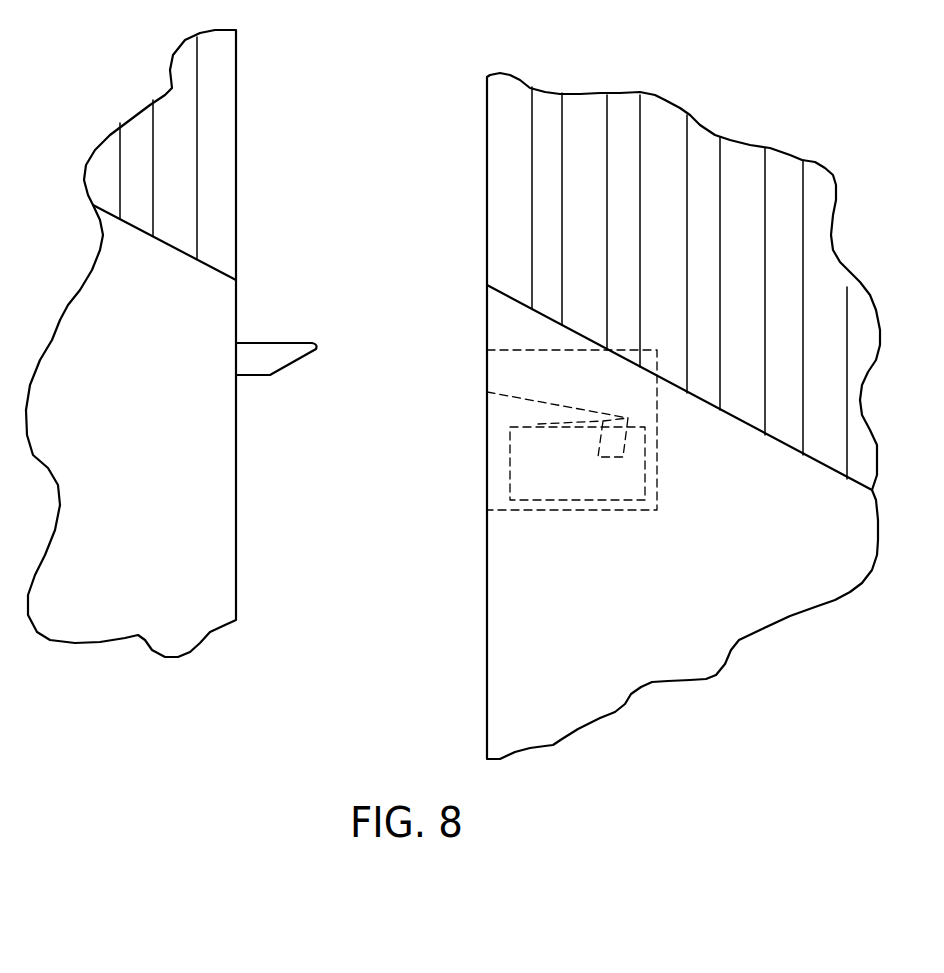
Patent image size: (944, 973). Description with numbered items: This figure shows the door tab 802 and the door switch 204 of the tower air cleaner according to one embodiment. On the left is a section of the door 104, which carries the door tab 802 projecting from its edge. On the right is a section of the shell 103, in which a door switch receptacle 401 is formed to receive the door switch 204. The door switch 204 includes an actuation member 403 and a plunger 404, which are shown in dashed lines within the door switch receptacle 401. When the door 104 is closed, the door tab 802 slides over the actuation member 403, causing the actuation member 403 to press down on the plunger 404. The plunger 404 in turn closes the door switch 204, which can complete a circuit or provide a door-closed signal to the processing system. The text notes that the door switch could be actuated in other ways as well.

The shell 103 is at (487, 674).
The door 104 is at (236, 553).
The door tab 802 is at (253, 380).
The door switch receptacle 401 is at (487, 452).
The actuation member 403 is at (452, 375).
The plunger 404 is at (550, 413).
The door switch 204 is at (555, 512).